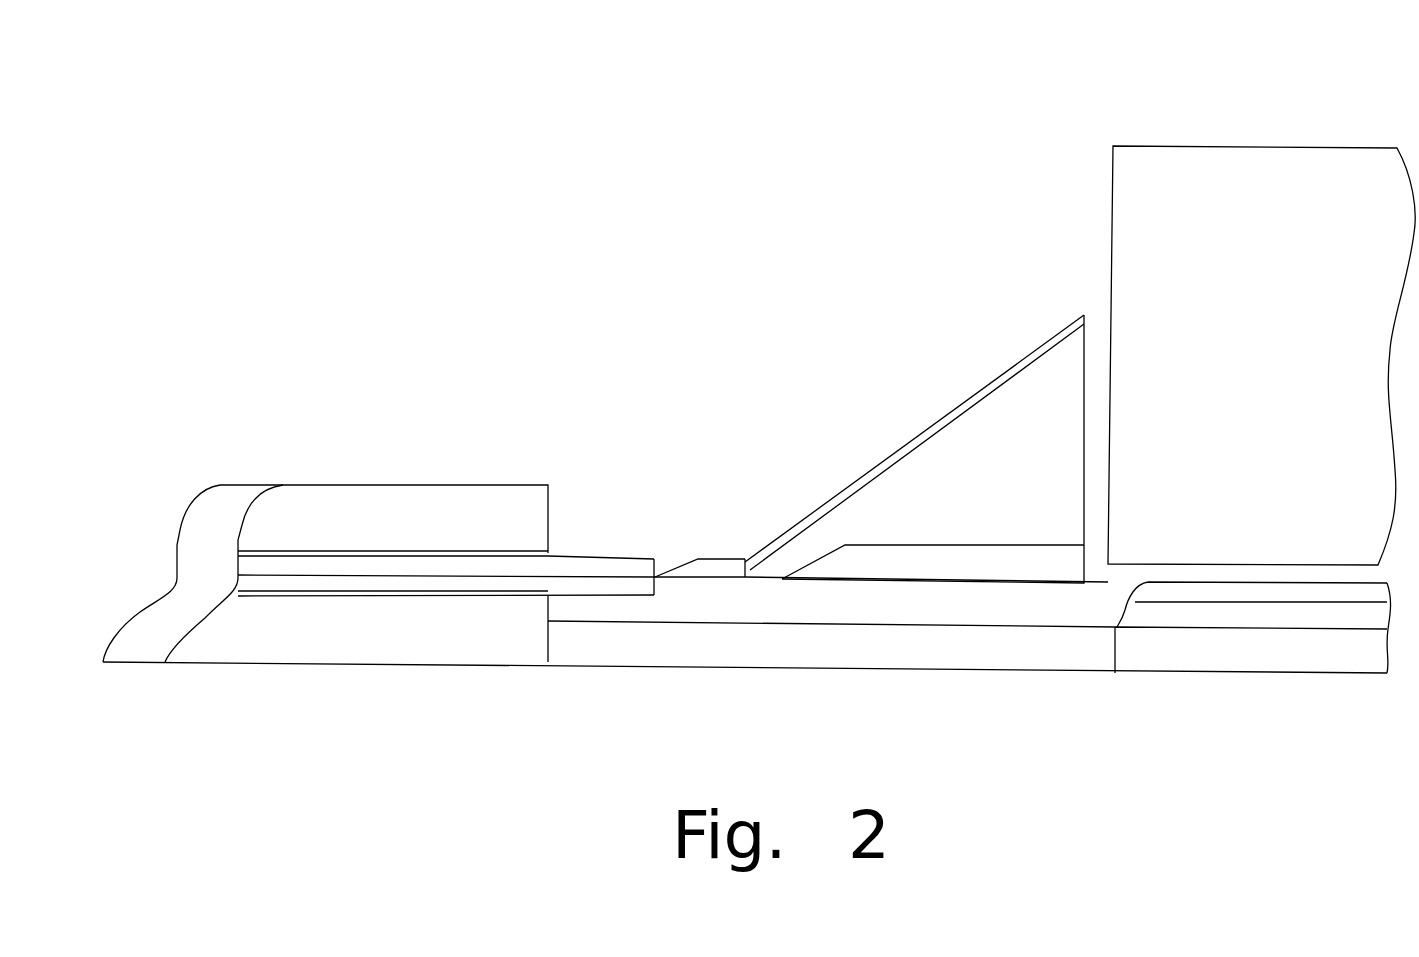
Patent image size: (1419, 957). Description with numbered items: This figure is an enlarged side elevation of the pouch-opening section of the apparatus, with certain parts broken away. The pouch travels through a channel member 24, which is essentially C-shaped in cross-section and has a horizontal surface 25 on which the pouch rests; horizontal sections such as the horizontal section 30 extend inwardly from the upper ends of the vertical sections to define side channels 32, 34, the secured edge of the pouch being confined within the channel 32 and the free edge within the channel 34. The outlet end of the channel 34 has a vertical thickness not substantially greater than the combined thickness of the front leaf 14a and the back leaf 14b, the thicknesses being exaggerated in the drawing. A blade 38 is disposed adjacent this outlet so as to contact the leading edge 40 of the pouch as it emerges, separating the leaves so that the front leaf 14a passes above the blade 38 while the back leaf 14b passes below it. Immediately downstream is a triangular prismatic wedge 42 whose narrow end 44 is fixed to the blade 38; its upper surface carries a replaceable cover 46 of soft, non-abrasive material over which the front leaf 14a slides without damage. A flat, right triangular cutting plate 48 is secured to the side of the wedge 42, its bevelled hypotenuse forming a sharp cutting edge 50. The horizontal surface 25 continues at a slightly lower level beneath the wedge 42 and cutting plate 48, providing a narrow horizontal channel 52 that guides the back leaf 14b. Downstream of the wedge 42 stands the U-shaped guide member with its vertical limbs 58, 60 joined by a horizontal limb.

The front leaf 14a is at (567, 567).
The back leaf 14b is at (612, 587).
The channel member 24 is at (332, 500).
The horizontal surface 25 is at (372, 596).
The horizontal section 30 is at (378, 505).
The channel 32 is at (1168, 612).
The channel 34 is at (470, 552).
The blade 38 is at (692, 573).
The leading edge 40 is at (657, 575).
The wedge 42 is at (914, 524).
The narrow end 44 is at (745, 577).
The replaceable cover 46 is at (873, 473).
The cutting plate 48 is at (918, 565).
The cutting edge 50 is at (782, 578).
The horizontal channel 52 is at (1012, 604).
The vertical limb 58 is at (1223, 401).
The vertical limb 60 is at (1261, 297).